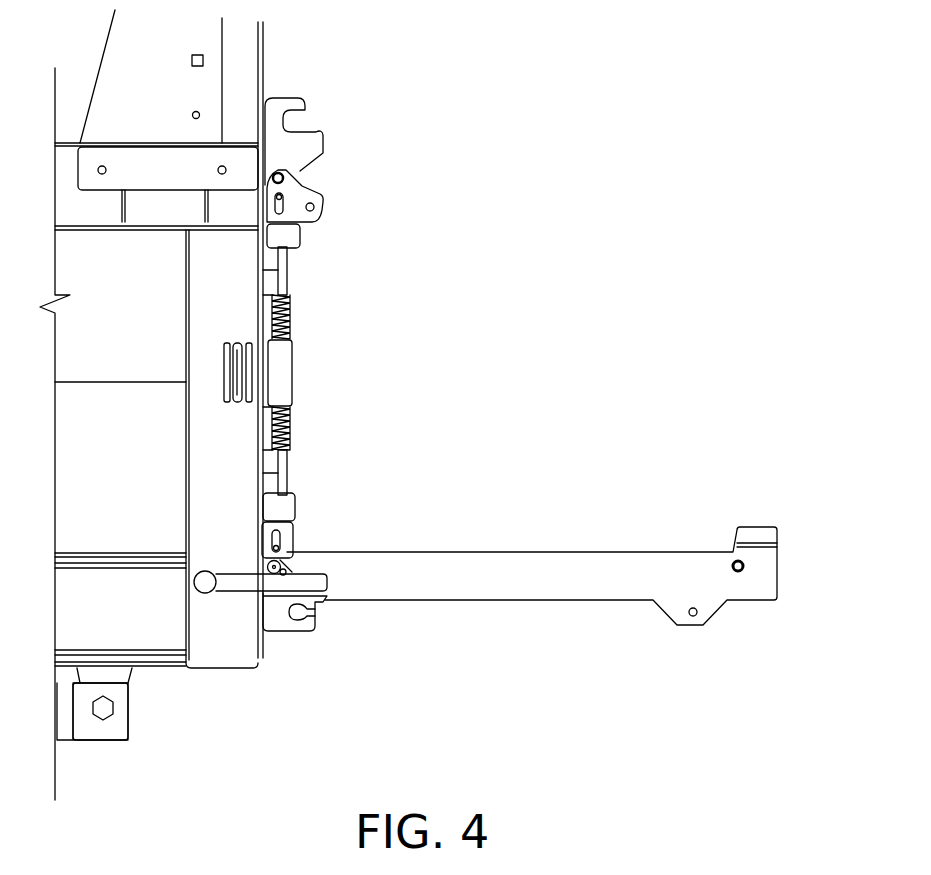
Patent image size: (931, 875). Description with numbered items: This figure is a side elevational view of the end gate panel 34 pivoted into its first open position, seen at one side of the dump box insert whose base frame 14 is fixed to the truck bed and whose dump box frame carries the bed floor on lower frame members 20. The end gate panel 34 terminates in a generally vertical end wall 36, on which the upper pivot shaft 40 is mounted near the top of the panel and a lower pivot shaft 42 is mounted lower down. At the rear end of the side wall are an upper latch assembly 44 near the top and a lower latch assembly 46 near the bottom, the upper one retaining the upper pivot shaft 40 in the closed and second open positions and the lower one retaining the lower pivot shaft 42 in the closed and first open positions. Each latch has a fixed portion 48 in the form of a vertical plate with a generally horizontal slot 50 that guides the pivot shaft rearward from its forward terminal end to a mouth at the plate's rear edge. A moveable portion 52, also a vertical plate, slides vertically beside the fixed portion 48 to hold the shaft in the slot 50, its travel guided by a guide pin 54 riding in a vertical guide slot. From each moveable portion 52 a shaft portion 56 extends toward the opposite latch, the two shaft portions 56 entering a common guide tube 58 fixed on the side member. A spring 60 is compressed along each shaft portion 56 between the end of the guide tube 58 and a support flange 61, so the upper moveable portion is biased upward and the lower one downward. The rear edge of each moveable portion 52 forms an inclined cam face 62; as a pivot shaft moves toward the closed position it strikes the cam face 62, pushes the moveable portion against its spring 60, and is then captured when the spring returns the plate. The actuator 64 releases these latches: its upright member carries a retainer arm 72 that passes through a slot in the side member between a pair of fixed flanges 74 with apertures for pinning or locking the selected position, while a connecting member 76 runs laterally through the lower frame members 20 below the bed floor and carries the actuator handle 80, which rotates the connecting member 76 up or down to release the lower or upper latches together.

The base frame 14 is at (60, 723).
The lower frame members 20 is at (137, 638).
The end gate panel 34 is at (625, 643).
The end walls 36 is at (680, 567).
The upper pivot shafts 40 is at (741, 571).
The lower pivot shafts 42 is at (378, 538).
The upper latch assemblies 44 is at (382, 178).
The lower latch assemblies 46 is at (298, 552).
The fixed portion 48 is at (318, 208).
The slot 50 is at (297, 173).
The moveable portion 52 is at (302, 231).
The guide pin 54 is at (273, 196).
The shaft portion 56 is at (288, 257).
The guide tube 58 is at (292, 370).
The spring 60 is at (293, 315).
The support flange 61 is at (290, 293).
The cam face 62 is at (323, 183).
The actuator 64 is at (226, 621).
The retainer arm 72 is at (223, 355).
The fixed flanges 74 is at (224, 383).
The connecting member 76 is at (202, 594).
The actuator handle 80 is at (235, 584).